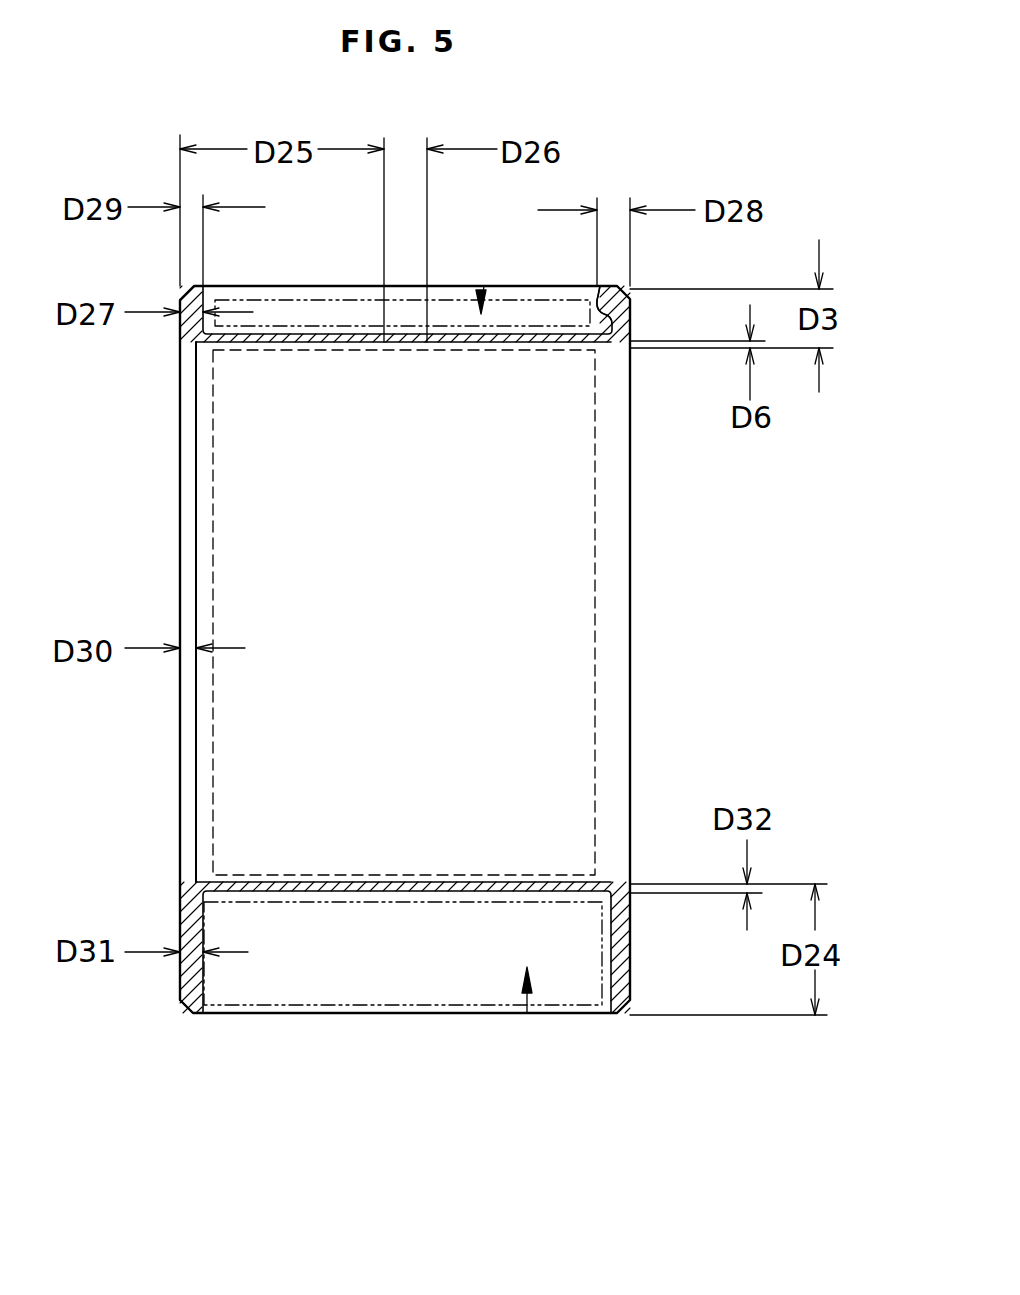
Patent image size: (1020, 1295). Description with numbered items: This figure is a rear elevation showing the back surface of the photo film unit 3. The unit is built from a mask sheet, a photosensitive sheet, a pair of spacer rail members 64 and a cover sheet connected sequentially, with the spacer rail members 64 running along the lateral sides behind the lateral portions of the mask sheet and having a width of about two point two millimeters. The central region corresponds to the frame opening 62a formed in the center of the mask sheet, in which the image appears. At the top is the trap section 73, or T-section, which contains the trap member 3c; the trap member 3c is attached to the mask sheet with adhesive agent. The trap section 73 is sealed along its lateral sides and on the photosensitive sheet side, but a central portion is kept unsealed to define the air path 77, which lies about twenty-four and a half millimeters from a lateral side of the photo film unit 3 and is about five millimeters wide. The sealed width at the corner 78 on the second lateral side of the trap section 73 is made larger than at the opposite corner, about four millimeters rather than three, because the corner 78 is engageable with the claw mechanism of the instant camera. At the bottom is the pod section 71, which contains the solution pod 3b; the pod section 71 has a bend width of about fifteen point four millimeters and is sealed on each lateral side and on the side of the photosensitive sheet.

The photo film unit 3 is at (409, 1013).
The solution pod 3b is at (300, 1013).
The trap member 3c is at (322, 286).
The spacer rail members 64 is at (187, 513).
The frame opening 62a is at (590, 526).
The pod section 71 is at (527, 1013).
The trap section 73 is at (484, 286).
The air path 77 is at (401, 346).
The corner 78 is at (604, 290).